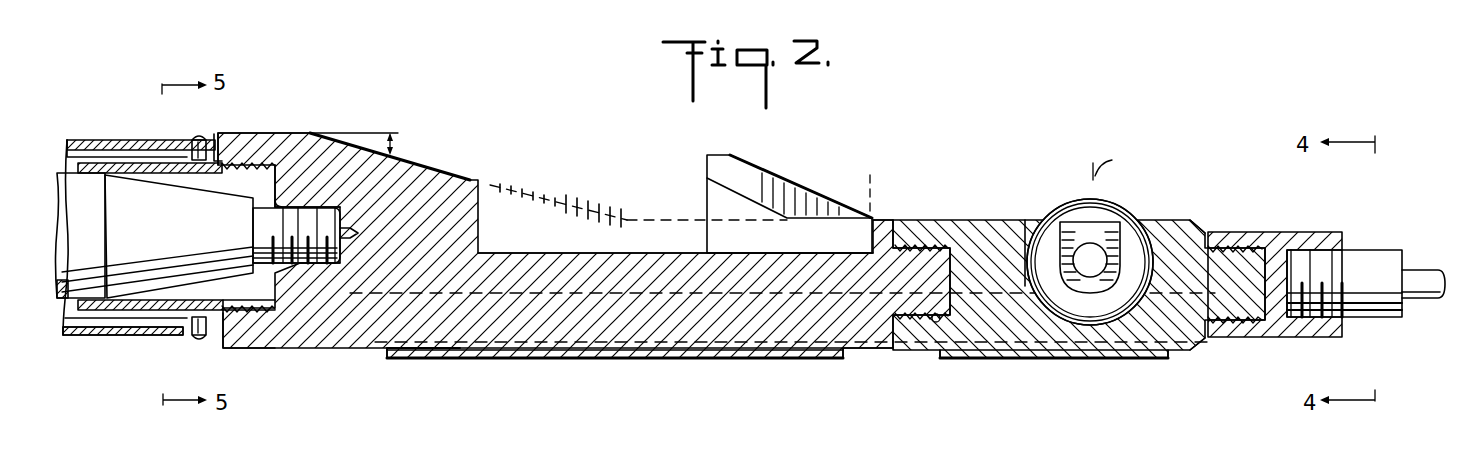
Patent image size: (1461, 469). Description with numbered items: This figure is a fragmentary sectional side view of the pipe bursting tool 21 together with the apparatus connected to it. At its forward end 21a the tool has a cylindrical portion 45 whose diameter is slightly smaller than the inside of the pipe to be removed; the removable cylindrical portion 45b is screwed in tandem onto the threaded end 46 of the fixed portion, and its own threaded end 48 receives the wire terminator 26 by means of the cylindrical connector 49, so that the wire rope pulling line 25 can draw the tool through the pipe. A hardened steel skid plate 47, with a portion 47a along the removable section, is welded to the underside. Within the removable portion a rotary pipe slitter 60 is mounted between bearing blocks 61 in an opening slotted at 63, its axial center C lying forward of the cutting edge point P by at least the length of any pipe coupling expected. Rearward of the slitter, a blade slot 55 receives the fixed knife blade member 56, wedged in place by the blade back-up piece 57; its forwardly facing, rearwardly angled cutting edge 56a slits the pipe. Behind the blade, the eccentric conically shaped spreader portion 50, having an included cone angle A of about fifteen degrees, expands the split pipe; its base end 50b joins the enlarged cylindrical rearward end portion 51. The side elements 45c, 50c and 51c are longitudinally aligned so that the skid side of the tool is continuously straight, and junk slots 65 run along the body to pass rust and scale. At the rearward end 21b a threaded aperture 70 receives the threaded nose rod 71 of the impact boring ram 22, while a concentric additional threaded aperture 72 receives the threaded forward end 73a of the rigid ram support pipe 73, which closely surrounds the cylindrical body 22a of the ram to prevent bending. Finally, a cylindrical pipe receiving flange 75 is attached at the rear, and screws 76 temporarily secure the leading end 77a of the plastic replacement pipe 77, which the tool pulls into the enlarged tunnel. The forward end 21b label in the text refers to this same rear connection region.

The pipe bursting tool 21 is at (838, 172).
The forward end of the tool 21a is at (1195, 220).
The rearward end of the tool 21b is at (262, 132).
The impact boring ram 22 is at (168, 227).
The cylindrical body of the ram 22a is at (90, 305).
The wire rope pulling line 25 is at (1423, 277).
The wire terminator 26 is at (1370, 258).
The cylindrical portion 45 is at (885, 358).
The removable cylindrical portion 45b is at (1000, 196).
The cylindrical surface-generating side element 45c is at (865, 352).
The threaded end of the fixed cylindrical portion 46 is at (940, 322).
The skid plate 47 is at (647, 358).
The skid plate portion 47a is at (1057, 360).
The threaded end 48 is at (1225, 318).
The cylindrical connector 49 is at (1267, 232).
The conically shaped spreader portion 50 is at (459, 176).
The base end of the spreader portion 50b is at (312, 132).
The conical surface-generating side element 50c is at (352, 352).
The cylindrical rearward end portion 51 is at (270, 132).
The cylindrical surface-generating side element of the rearward portion 51c is at (262, 352).
The blade slot 55 is at (694, 254).
The fixed knife blade member 56 is at (767, 246).
The cutting edge 56a is at (826, 151).
The blade back-up piece 57 is at (600, 182).
The rotary pipe slitter 60 is at (1113, 208).
The bearing blocks 61 is at (1135, 238).
The longitudinal slot 63 is at (1034, 220).
The junk slots 65 is at (458, 349).
The threaded aperture 70 is at (318, 266).
The threaded nose rod 71 is at (312, 183).
The additional threaded aperture 72 is at (268, 315).
The ram support pipe 73 is at (153, 312).
The threaded forward end of the support pipe 73a is at (262, 308).
The cylindrical pipe receiving flange 75 is at (224, 132).
The screws 76 is at (197, 138).
The plastic replacement pipe 77 is at (89, 131).
The leading end of the replacement pipe 77a is at (160, 140).
The included cone angle A is at (398, 144).
The axial center of the slitter C is at (1108, 159).
The point on the cutting edge P is at (872, 215).